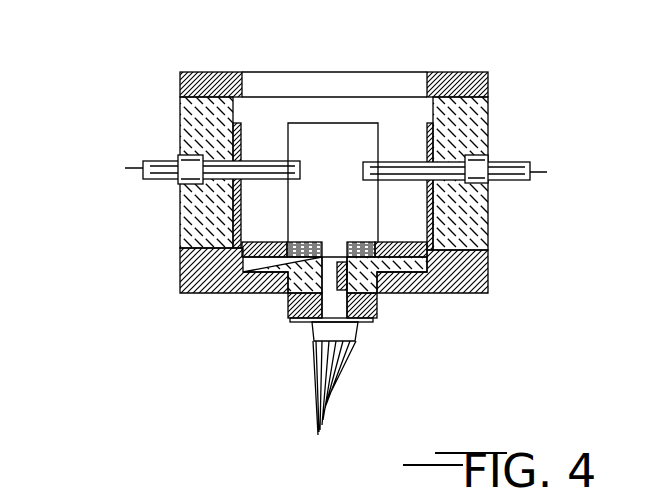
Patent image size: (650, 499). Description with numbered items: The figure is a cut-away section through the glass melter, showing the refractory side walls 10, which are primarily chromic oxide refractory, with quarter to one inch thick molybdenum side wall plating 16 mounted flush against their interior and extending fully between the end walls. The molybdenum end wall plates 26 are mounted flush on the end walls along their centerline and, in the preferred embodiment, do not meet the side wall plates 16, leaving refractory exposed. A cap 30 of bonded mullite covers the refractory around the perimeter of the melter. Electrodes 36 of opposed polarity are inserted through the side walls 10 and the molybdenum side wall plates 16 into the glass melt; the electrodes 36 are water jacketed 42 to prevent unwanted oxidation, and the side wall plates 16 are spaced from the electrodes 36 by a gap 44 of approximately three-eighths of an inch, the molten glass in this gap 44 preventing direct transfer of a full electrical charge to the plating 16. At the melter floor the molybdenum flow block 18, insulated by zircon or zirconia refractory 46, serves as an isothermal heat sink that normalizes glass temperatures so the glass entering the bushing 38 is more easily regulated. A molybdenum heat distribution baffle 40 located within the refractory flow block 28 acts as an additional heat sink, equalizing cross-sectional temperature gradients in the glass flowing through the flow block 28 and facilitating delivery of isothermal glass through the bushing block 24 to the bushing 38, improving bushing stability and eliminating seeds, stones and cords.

The side walls 10 is at (177, 133).
The molybdenum side wall plating 16 is at (178, 112).
The flow block 18 is at (362, 237).
The bushing block 24 is at (287, 313).
The molybdenum end wall plates 26 is at (313, 133).
The refractory flow block 28 is at (402, 267).
The cap 30 is at (212, 80).
The electrodes 36 is at (142, 178).
The bushing 38 is at (310, 340).
The heat distribution baffle 40 is at (362, 322).
The water jacket 42 is at (182, 187).
The gap 44 is at (236, 196).
The zircon or zirconia refractory 46 is at (247, 295).